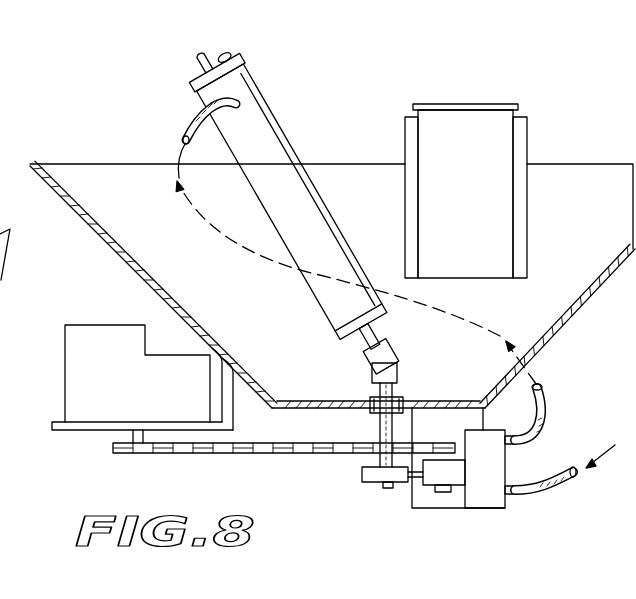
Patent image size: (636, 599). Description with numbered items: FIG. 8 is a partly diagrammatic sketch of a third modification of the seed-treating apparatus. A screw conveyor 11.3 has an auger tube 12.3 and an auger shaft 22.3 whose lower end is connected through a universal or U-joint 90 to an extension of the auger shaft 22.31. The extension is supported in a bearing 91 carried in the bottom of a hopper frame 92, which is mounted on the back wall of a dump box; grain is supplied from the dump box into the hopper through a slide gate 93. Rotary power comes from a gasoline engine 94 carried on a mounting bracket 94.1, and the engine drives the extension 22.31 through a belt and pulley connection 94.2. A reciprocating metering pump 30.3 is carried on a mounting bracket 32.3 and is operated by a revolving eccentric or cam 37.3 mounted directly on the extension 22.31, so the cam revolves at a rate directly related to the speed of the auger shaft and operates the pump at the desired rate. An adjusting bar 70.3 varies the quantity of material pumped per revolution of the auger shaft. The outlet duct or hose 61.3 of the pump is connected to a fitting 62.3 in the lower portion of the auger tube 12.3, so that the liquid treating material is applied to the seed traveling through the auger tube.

The screw conveyor 11.3 is at (274, 120).
The auger tube 12.3 is at (323, 227).
The auger shaft 22.3 is at (368, 333).
The extension of the auger shaft 22.31 is at (385, 490).
The reciprocating metering pump 30.3 is at (485, 503).
The mounting bracket 32.3 is at (453, 505).
The revolving eccentric or cam 37.3 is at (360, 473).
The outlet duct or hose 61.3 is at (548, 413).
The fitting 62.3 is at (234, 108).
The adjusting bar 70.3 is at (438, 493).
The universal joint 90 is at (392, 357).
The bearing 91 is at (400, 395).
The hopper frame 92 is at (556, 331).
The slide gate 93 is at (507, 104).
The gasoline engine 94 is at (122, 337).
The mounting bracket 94.1 is at (90, 433).
The belt and pulley connection 94.2 is at (166, 458).